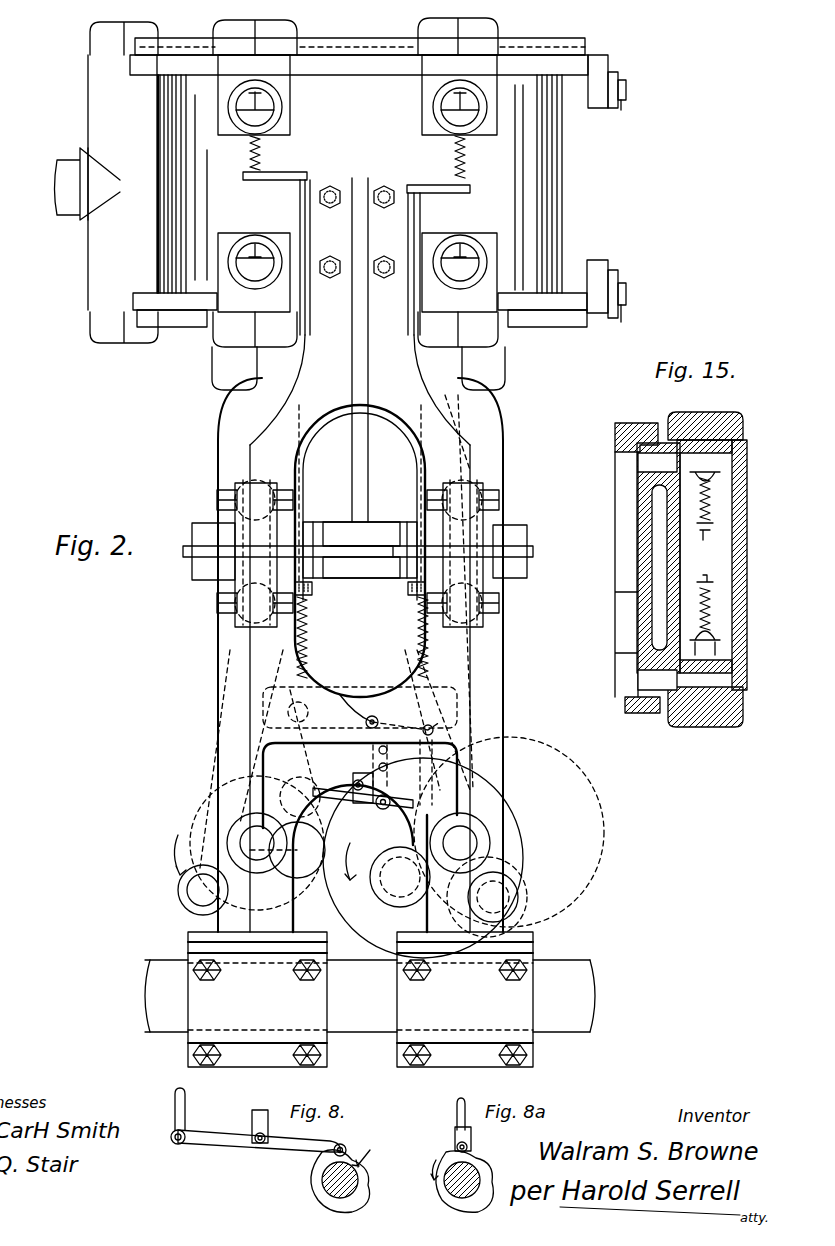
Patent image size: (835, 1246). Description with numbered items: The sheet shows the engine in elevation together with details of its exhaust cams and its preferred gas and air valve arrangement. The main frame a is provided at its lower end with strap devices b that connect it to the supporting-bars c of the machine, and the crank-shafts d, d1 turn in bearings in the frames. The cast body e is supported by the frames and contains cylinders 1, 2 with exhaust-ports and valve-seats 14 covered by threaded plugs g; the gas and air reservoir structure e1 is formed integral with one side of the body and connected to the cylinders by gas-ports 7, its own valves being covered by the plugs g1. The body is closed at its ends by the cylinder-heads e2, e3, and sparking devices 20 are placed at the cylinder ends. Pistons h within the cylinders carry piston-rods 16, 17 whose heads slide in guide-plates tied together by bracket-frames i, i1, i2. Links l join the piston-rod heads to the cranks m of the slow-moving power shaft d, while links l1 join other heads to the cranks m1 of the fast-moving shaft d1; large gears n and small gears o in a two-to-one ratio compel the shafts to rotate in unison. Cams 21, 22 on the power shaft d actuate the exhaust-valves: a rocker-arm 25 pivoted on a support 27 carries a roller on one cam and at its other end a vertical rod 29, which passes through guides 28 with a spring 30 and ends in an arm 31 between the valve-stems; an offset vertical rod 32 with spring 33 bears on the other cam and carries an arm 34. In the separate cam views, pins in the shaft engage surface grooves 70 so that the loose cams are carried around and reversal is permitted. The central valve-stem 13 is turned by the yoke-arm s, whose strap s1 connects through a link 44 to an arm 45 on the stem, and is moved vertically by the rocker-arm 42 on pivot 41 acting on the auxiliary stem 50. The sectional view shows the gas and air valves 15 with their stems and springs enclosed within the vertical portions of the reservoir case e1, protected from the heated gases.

In FIG. 2, the plug g1 is at (98, 40).
In FIG. 15, the plug g1 is at (720, 410).
In FIG. 2, the plug g is at (222, 20).
In FIG. 2, the cylinder-head e2 is at (352, 50).
In FIG. 15, the cylinder-head e2 is at (636, 422).
In FIG. 2, the valve-seat 14 is at (253, 95).
In FIG. 2, the sparking device 20 is at (612, 188).
In FIG. 2, the cast body e is at (360, 317).
In FIG. 2, the gas and air reservoir structure e1 is at (309, 182).
In FIG. 15, the gas and air reservoir structure e1 is at (745, 560).
In FIG. 2, the cylinder 1 is at (241, 153).
In FIG. 15, the cylinder 1 is at (626, 574).
In FIG. 2, the cylinder 2 is at (477, 162).
In FIG. 2, the arm 31 is at (290, 165).
In FIG. 2, the arm 34 is at (436, 187).
In FIG. 2, the cylinder-head e3 is at (200, 325).
In FIG. 15, the cylinder-head e3 is at (635, 714).
In FIG. 2, the piston-rod 16 is at (238, 390).
In FIG. 2, the piston-rod 17 is at (478, 390).
In FIG. 2, the main frame a is at (485, 442).
In FIG. 2, the valve-stem 13 is at (362, 457).
In FIG. 2, the vertical rod 29 is at (305, 216).
In FIG. 8, the vertical rod 29 is at (184, 1096).
In FIG. 2, the vertical rod 32 is at (412, 219).
In FIG. 8A, the vertical rod 32 is at (456, 1113).
In FIG. 2, the spring 30 is at (305, 645).
In FIG. 2, the spring 33 is at (416, 640).
In FIG. 2, the bracket-frame i is at (517, 531).
In FIG. 2, the bracket-frame i1 is at (339, 572).
In FIG. 2, the bracket-frame i2 is at (196, 528).
In FIG. 2, the guide 28 is at (308, 712).
In FIG. 2, the link l is at (420, 651).
In FIG. 2, the link l1 is at (270, 688).
In FIG. 2, the arm 45 is at (358, 705).
In FIG. 2, the link 44 is at (378, 718).
In FIG. 2, the strap s1 is at (432, 722).
In FIG. 2, the auxiliary stem 50 is at (352, 776).
In FIG. 2, the rocker-arm 42 is at (388, 778).
In FIG. 2, the pivot 41 is at (414, 796).
In FIG. 2, the rocker-arm 25 is at (363, 807).
In FIG. 8, the rocker-arm 25 is at (235, 1143).
In FIG. 2, the support 27 is at (405, 812).
In FIG. 8, the support 27 is at (256, 1121).
In FIG. 2, the yoke-arm s is at (385, 822).
In FIG. 2, the crank m1 is at (200, 886).
In FIG. 2, the small gear o is at (192, 816).
In FIG. 2, the fast-moving shaft d1 is at (260, 858).
In FIG. 2, the slow-moving power shaft d is at (470, 843).
In FIG. 8, the slow-moving power shaft d is at (367, 1152).
In FIG. 8A, the slow-moving power shaft d is at (478, 1167).
In FIG. 2, the crank m is at (405, 882).
In FIG. 2, the large gear n is at (509, 829).
In FIG. 2, the strap device b is at (360, 999).
In FIG. 2, the supporting-bar c is at (370, 996).
In FIG. 15, the gas-port 7 is at (657, 571).
In FIG. 15, the gas and air valve 15 is at (712, 497).
In FIG. 15, the piston h is at (622, 620).
In FIG. 8, the surface groove 70 is at (325, 1180).
In FIG. 8A, the surface groove 70 is at (445, 1183).
In FIG. 8, the cam 21 is at (325, 1200).
In FIG. 8A, the cam 22 is at (448, 1203).